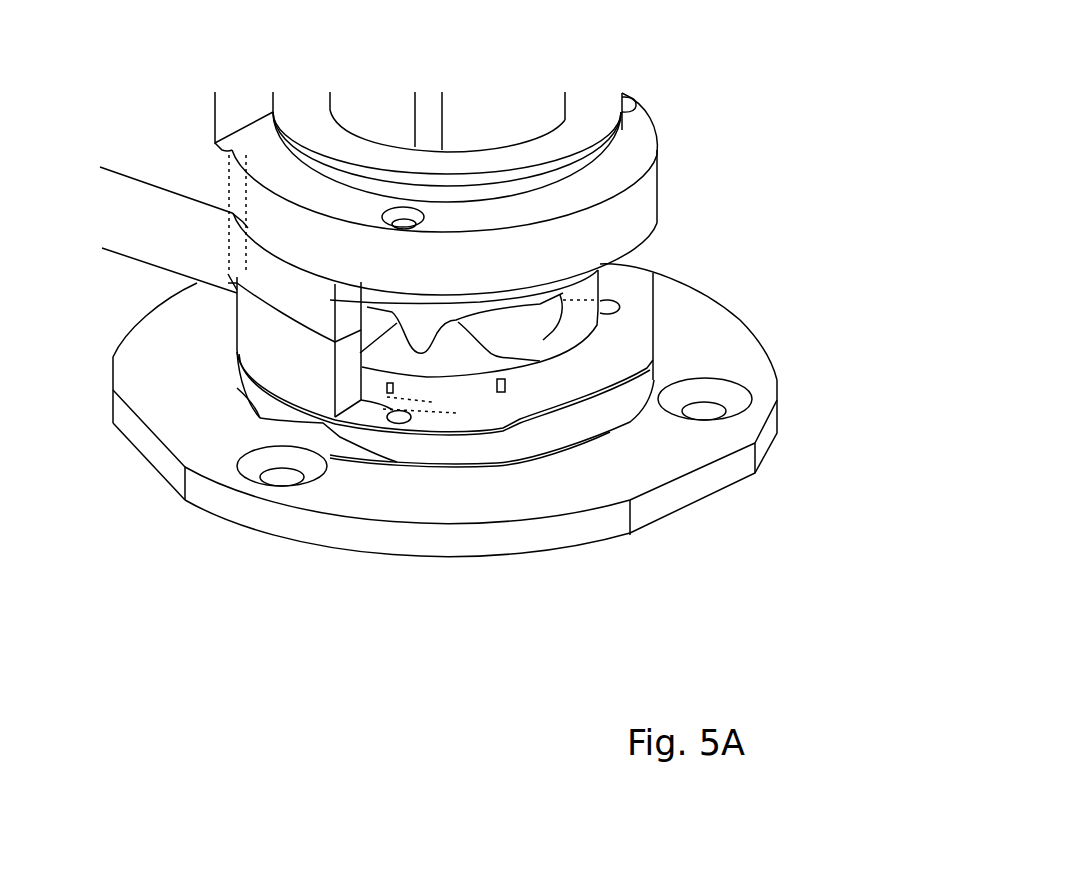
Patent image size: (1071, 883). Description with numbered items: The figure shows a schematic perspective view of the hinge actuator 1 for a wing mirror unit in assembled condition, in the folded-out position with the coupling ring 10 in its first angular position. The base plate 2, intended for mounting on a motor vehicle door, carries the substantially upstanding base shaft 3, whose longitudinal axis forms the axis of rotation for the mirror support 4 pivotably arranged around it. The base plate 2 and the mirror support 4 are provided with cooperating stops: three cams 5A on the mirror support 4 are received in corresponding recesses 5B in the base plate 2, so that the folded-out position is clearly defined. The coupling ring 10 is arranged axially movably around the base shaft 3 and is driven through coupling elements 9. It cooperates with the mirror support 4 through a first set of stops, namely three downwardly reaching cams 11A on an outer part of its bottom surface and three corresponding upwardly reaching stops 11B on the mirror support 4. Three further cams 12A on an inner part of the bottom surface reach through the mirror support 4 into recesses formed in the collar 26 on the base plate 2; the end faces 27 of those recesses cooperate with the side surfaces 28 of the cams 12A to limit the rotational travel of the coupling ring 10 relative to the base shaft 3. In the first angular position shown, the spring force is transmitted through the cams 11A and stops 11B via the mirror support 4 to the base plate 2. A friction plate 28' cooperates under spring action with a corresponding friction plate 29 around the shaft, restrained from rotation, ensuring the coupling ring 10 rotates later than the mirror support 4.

The hinge actuator 1 is at (772, 129).
The base plate 2 is at (725, 338).
The base shaft 3 is at (508, 108).
The mirror support 4 is at (118, 203).
The cams 5A is at (380, 442).
The recesses 5B is at (395, 460).
The coupling elements 9 is at (418, 333).
The coupling ring 10 is at (560, 335).
The downwardly reaching cams 11A is at (420, 377).
The upwardly reaching stops 11B is at (422, 407).
The further cams 12A is at (495, 389).
The collar 26 is at (537, 378).
The end faces 27 is at (477, 390).
The side surfaces 28 is at (492, 501).
The friction plate 28' is at (531, 197).
The friction plate 29 is at (583, 132).